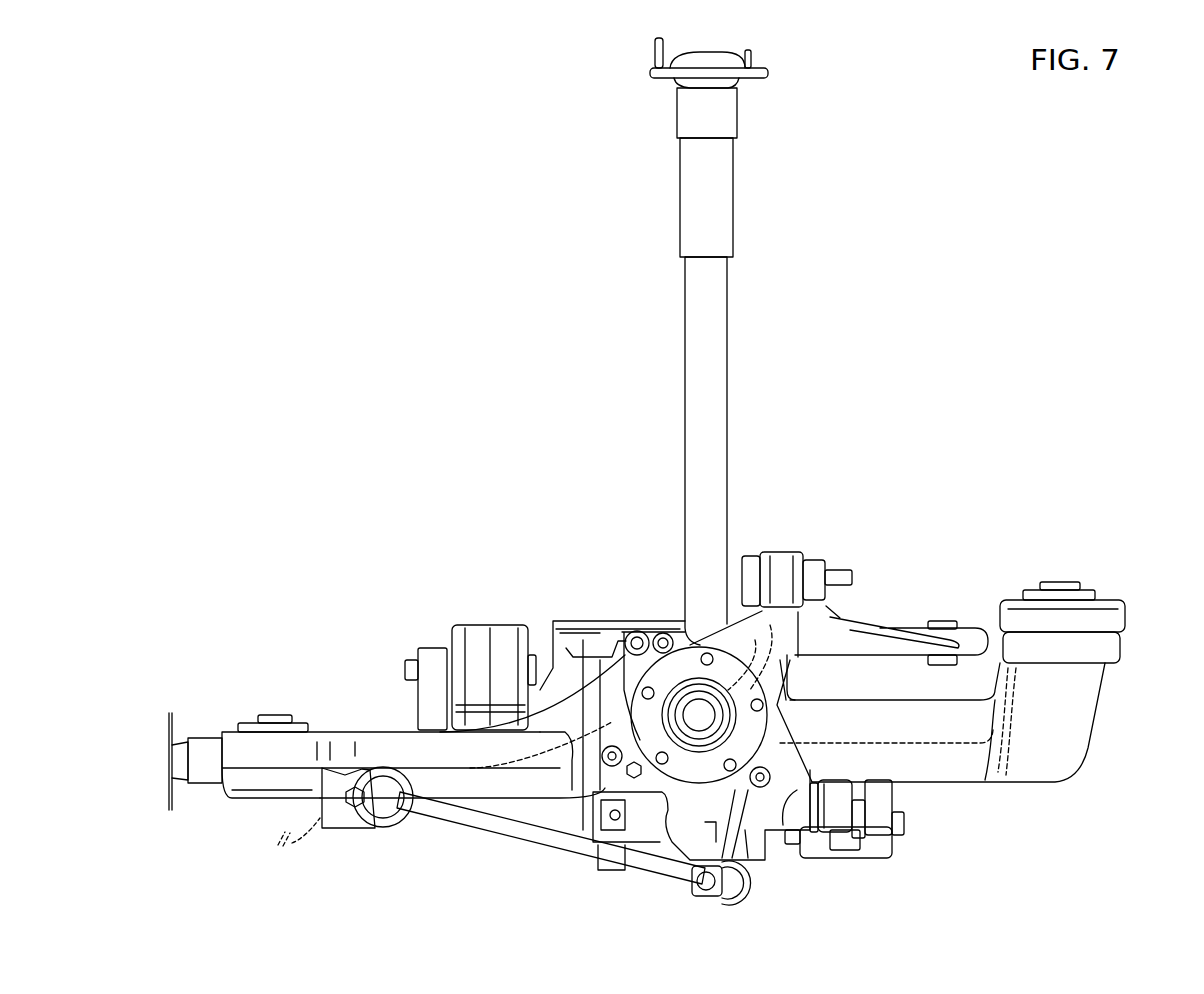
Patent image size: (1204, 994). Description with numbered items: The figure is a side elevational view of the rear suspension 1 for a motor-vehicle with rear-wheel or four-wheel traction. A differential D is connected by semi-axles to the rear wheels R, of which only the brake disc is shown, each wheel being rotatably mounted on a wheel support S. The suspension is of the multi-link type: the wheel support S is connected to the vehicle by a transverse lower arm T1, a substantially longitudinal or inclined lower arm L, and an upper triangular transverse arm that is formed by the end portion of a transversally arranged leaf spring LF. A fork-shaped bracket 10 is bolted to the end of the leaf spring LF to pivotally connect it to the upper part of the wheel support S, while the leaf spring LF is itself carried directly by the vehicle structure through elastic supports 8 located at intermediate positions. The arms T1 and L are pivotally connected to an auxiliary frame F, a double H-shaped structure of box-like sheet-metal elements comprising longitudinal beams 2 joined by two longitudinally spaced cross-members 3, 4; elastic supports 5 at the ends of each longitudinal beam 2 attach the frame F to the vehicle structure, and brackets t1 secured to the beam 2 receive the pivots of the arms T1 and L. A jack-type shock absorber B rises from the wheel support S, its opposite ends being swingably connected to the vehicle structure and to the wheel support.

The rear suspension 1 is at (378, 288).
The shock absorber B is at (683, 418).
The differential D is at (578, 618).
The rear wheel R is at (776, 741).
The wheel support S is at (760, 652).
The fork-shaped bracket 10 is at (824, 556).
The leaf spring LF is at (906, 620).
The elastic support 8 is at (950, 626).
The auxiliary frame F is at (1128, 602).
The elastic support 5 is at (1046, 586).
The longitudinal beam 2 is at (1036, 762).
The cross-member 4 is at (890, 850).
The bracket t1 is at (397, 750).
The cross-member 3 is at (470, 622).
The longitudinal lower arm L is at (520, 842).
The transverse lower arm T1 is at (602, 860).